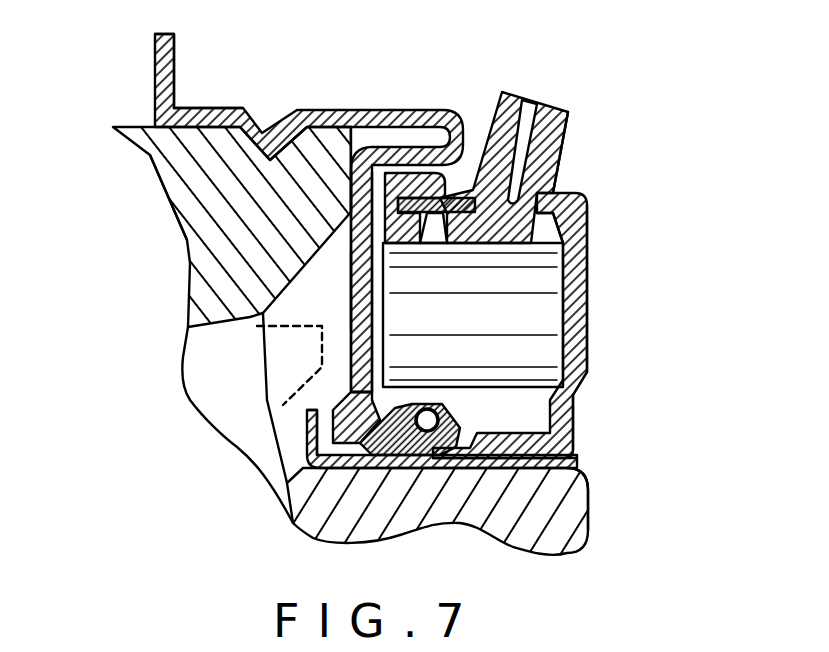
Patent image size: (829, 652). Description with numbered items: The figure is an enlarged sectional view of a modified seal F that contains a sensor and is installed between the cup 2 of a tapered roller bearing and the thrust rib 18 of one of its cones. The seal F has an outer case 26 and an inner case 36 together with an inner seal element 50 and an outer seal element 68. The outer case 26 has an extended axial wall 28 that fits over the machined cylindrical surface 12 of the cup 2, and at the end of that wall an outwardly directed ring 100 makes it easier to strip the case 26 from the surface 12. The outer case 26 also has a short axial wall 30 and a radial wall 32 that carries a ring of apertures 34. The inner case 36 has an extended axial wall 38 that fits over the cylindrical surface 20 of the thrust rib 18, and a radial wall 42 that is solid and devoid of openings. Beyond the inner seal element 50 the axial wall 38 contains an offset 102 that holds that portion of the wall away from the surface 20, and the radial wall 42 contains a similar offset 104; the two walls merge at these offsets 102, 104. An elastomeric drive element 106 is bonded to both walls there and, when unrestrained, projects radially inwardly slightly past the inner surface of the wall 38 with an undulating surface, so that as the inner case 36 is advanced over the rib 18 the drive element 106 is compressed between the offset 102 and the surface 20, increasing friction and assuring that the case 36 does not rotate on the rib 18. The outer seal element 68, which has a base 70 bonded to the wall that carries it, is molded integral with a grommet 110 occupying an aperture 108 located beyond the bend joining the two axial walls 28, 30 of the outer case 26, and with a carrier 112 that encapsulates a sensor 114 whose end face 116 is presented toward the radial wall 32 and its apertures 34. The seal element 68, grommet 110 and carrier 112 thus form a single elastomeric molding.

The cup 2 is at (152, 156).
The cylindrical surface 12 is at (137, 126).
The thrust rib 18 is at (310, 432).
The cylindrical surface 20 is at (300, 530).
The outer case 26 is at (259, 197).
The extended axial wall 28 is at (218, 108).
The short axial wall 30 is at (378, 150).
The radial wall 32 is at (355, 211).
The apertures 34 is at (350, 303).
The inner case 36 is at (558, 325).
The extended axial wall 38 is at (437, 463).
The radial wall 42 is at (578, 343).
The inner seal element 50 is at (393, 440).
The outer seal element 68 is at (355, 182).
The base 70 is at (440, 165).
The ring 100 is at (155, 51).
The offset 102 is at (532, 470).
The offset 104 is at (575, 412).
The drive element 106 is at (417, 439).
The aperture 108 is at (512, 200).
The grommet 110 is at (553, 152).
The carrier 112 is at (555, 242).
The sensor 114 is at (535, 315).
The end face 116 is at (350, 345).
The modified seal F is at (588, 128).